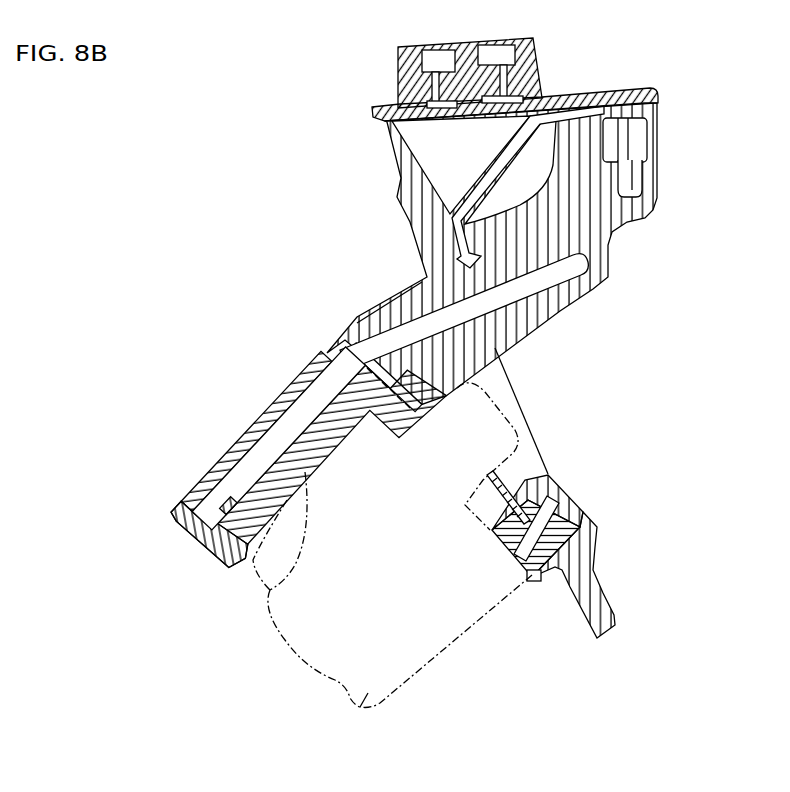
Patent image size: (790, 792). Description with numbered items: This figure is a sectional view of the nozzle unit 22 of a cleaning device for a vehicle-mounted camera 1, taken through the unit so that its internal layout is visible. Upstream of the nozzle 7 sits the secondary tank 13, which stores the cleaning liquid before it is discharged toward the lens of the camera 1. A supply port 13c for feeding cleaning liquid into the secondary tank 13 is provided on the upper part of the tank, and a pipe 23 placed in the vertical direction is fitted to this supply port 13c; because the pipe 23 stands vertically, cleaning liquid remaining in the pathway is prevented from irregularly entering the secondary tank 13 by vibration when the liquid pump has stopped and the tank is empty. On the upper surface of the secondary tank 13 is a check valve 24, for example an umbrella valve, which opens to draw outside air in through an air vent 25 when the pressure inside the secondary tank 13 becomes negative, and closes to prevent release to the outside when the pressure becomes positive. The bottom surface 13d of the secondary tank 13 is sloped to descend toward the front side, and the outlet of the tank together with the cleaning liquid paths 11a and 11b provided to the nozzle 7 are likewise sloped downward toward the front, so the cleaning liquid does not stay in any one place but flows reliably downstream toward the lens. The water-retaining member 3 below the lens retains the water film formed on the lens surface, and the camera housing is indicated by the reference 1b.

The camera 1 is at (482, 606).
The housing wall 1b is at (268, 597).
The water-retaining member 3 is at (358, 708).
The nozzle 7 is at (258, 403).
The cleaning liquid path 11a is at (234, 498).
The cleaning liquid path 11b is at (229, 506).
The secondary tank 13 is at (443, 170).
The supply port 13c is at (590, 97).
The bottom surface 13d is at (518, 197).
The nozzle unit 22 is at (603, 341).
The pipe 23 is at (643, 185).
The check valve 24 is at (541, 80).
The air vent 25 is at (410, 85).